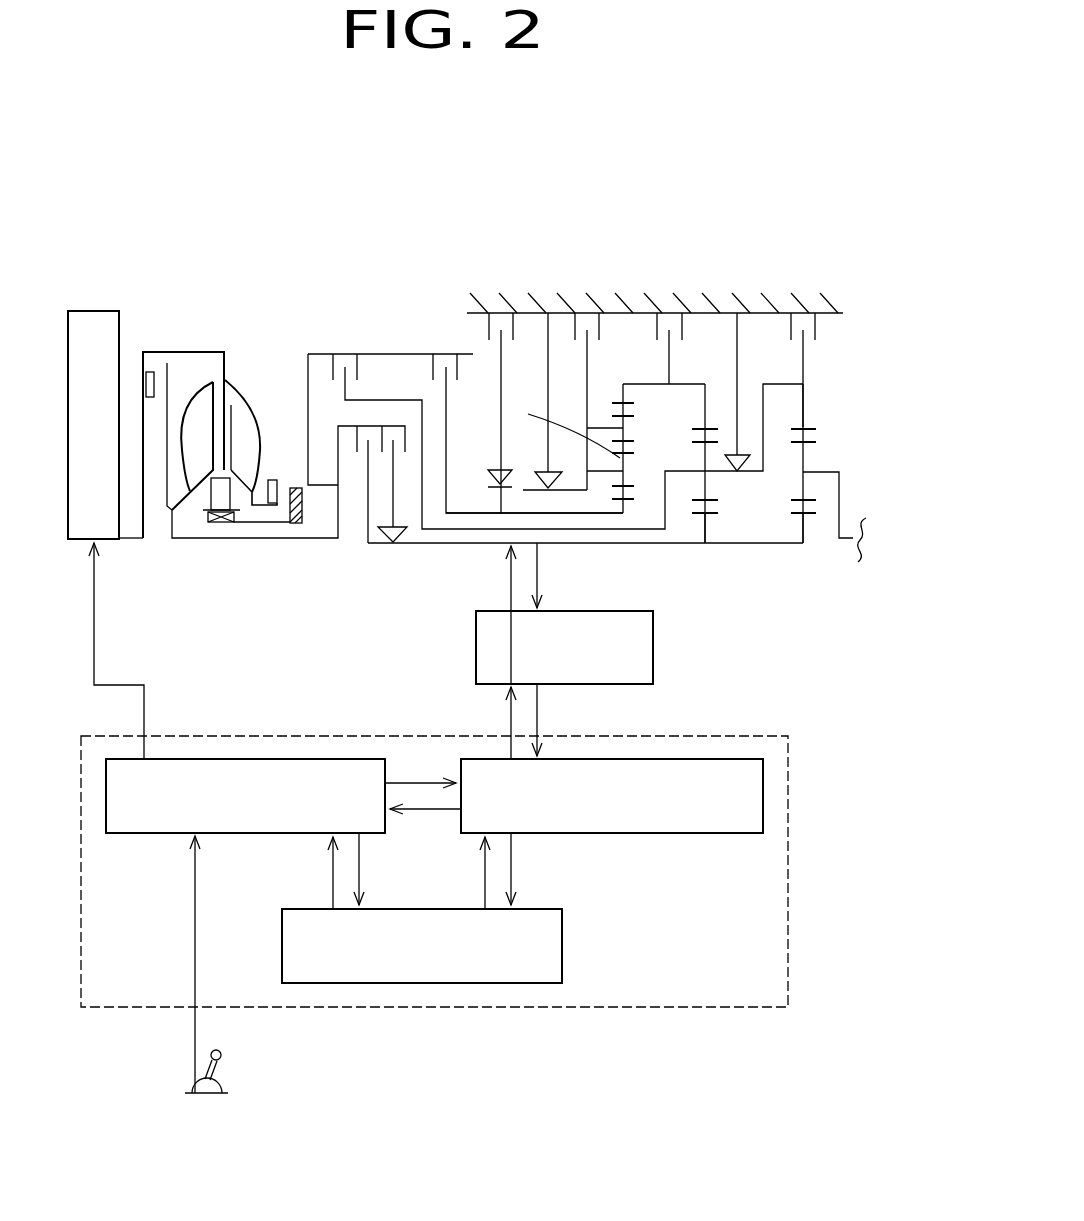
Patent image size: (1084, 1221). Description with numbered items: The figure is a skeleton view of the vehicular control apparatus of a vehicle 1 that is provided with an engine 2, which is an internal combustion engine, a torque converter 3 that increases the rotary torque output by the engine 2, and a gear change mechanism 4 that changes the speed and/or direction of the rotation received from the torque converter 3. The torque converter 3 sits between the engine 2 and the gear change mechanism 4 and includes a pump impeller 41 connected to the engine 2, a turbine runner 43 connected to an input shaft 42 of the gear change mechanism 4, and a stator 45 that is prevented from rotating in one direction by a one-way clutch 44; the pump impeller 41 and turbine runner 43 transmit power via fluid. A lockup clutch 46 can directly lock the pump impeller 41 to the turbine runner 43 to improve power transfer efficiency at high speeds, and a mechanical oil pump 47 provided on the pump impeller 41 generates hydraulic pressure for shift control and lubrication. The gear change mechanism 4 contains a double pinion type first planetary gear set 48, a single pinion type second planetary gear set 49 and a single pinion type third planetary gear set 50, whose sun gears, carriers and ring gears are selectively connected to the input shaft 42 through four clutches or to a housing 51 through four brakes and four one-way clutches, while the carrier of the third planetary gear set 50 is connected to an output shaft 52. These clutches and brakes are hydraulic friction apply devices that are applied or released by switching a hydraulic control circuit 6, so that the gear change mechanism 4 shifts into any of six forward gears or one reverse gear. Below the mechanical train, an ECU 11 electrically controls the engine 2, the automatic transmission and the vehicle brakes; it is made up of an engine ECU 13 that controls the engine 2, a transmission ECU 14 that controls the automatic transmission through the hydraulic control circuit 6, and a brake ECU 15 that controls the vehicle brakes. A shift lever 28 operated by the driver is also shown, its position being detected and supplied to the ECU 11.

The vehicle 1 is at (774, 181).
The engine 2 is at (93, 310).
The torque converter 3 is at (244, 338).
The gear change mechanism 4 is at (712, 247).
The hydraulic control circuit 6 is at (653, 672).
The ECU 11 is at (735, 1008).
The engine ECU 13 is at (227, 759).
The transmission ECU 14 is at (763, 783).
The brake ECU 15 is at (522, 983).
The shift lever 28 is at (221, 1054).
The pump impeller 41 is at (250, 392).
The input shaft 42 is at (258, 540).
The turbine runner 43 is at (212, 382).
The one-way clutch 44 is at (223, 524).
The stator 45 is at (210, 490).
The lockup clutch 46 is at (152, 352).
The mechanical oil pump 47 is at (272, 480).
The first planetary gear set 48 is at (610, 521).
The second planetary gear set 49 is at (706, 548).
The third planetary gear set 50 is at (798, 548).
The housing 51 is at (297, 523).
The output shaft 52 is at (857, 560).